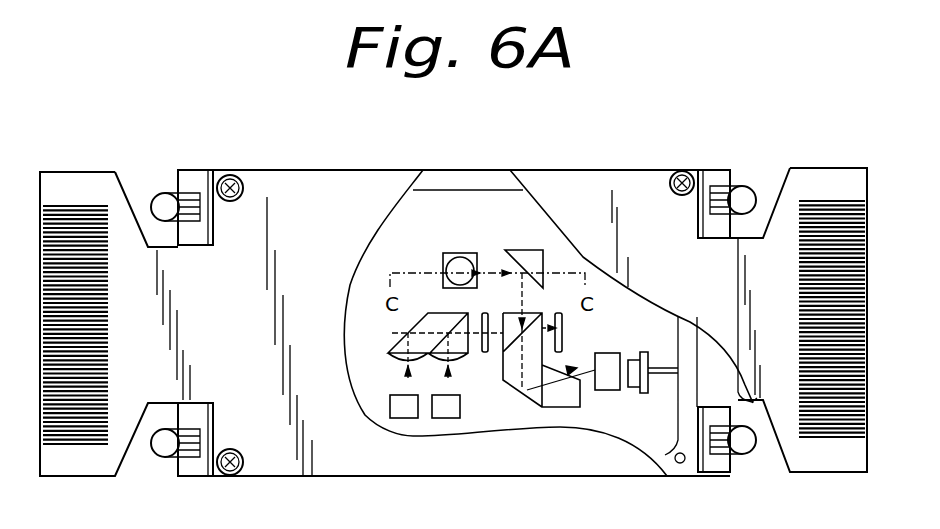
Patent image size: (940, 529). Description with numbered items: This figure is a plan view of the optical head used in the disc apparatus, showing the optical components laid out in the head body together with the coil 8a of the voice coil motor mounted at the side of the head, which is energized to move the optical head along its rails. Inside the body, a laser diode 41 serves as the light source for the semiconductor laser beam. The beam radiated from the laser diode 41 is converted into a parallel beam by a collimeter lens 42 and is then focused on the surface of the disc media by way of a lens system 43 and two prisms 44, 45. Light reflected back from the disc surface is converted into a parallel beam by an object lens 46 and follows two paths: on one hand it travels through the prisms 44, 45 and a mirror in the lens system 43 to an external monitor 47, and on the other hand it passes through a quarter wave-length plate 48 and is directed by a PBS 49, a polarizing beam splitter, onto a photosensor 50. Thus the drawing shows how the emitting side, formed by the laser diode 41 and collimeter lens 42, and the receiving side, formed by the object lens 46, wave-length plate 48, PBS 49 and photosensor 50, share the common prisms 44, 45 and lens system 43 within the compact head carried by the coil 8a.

The coil 8a is at (868, 305).
The laser diode 41 is at (637, 390).
The collimeter lens 42 is at (607, 390).
The lens system 43 is at (503, 380).
The prism 44 is at (543, 262).
The prism 45 is at (447, 253).
The object lens 46 is at (463, 253).
The external monitor 47 is at (567, 338).
The quarter wave-length plate 48 is at (493, 317).
The PBS 49 is at (458, 337).
The photosensor 50 is at (408, 418).